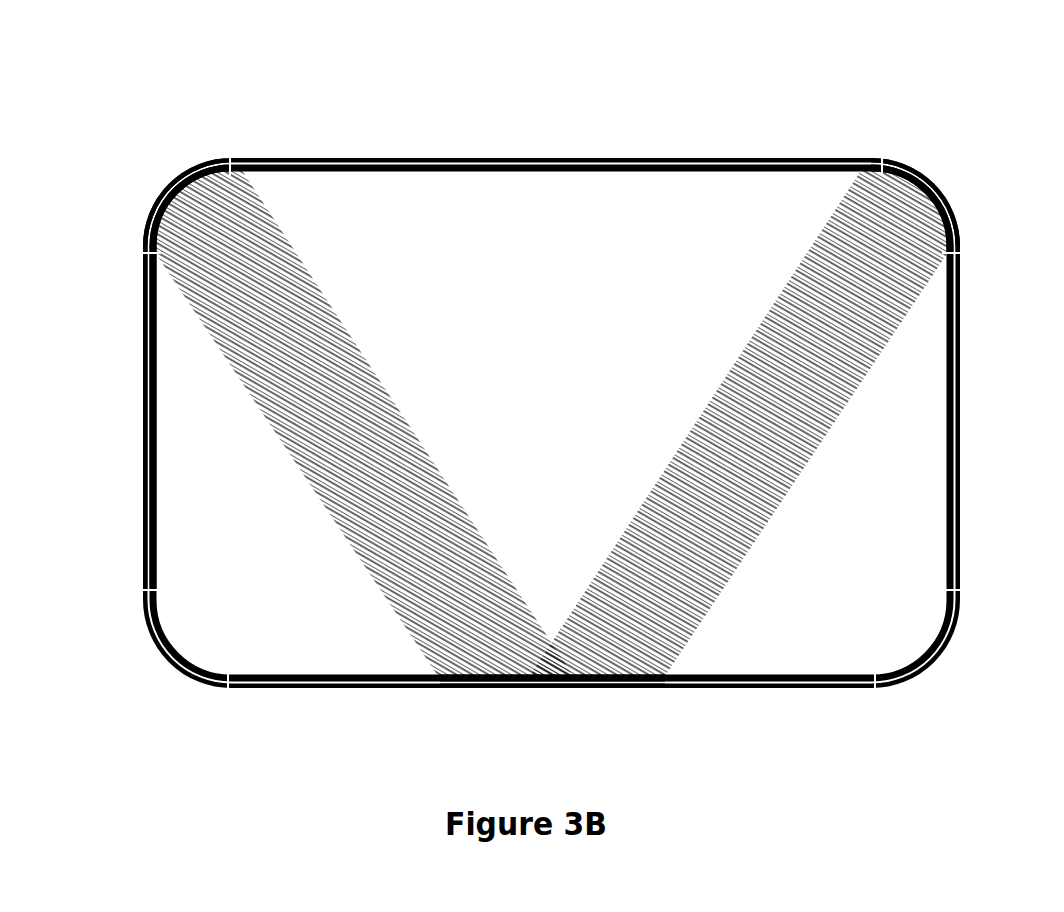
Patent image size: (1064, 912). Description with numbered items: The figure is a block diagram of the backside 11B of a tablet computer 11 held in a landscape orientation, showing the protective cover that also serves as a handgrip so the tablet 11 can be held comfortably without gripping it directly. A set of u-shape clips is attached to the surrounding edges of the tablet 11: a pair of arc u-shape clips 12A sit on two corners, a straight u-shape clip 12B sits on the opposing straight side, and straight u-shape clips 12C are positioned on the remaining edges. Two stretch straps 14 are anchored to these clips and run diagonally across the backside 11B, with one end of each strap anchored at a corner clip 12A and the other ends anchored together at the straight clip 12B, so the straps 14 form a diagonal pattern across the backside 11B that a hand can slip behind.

The tablet computer 11 is at (373, 167).
The backside 11B is at (515, 205).
The arc u-shape clip 12A is at (147, 193).
The straight u-shape clip 12B is at (550, 695).
The straight u-shape clip 12C is at (147, 432).
The stretch straps 14 is at (683, 430).